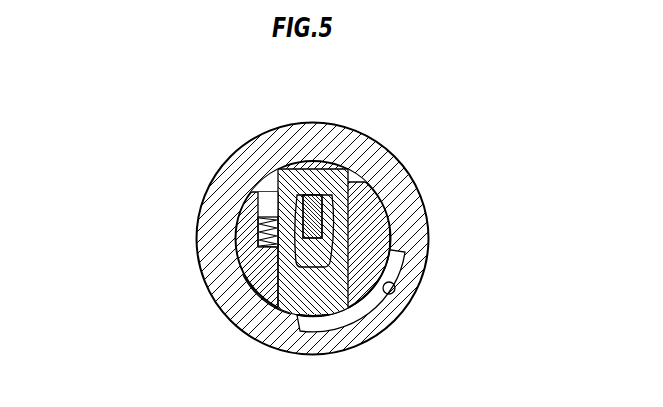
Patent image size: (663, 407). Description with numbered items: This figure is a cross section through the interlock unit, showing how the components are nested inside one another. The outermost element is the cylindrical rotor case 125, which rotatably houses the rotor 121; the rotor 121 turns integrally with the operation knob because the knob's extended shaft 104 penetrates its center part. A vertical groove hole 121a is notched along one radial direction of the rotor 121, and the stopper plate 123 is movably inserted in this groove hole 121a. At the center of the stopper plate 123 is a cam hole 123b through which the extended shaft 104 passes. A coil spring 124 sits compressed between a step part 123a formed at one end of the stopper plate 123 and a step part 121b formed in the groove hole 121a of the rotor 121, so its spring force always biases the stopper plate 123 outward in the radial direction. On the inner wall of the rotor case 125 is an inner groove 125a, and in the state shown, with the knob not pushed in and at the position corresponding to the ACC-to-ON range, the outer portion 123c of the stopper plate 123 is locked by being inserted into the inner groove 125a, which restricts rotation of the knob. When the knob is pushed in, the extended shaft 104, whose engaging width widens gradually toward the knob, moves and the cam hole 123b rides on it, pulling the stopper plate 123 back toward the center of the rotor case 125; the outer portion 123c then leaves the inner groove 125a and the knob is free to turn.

The extended shaft 104 is at (292, 296).
The rotor 121 is at (248, 200).
The groove hole 121a is at (386, 242).
The step part 121b is at (279, 249).
The stopper plate 123 is at (317, 295).
The step part 123a is at (262, 217).
The cam hole 123b is at (325, 201).
The outer portion 123c is at (308, 168).
The spring 124 is at (262, 235).
The rotor case 125 is at (388, 172).
The inner groove 125a is at (395, 290).